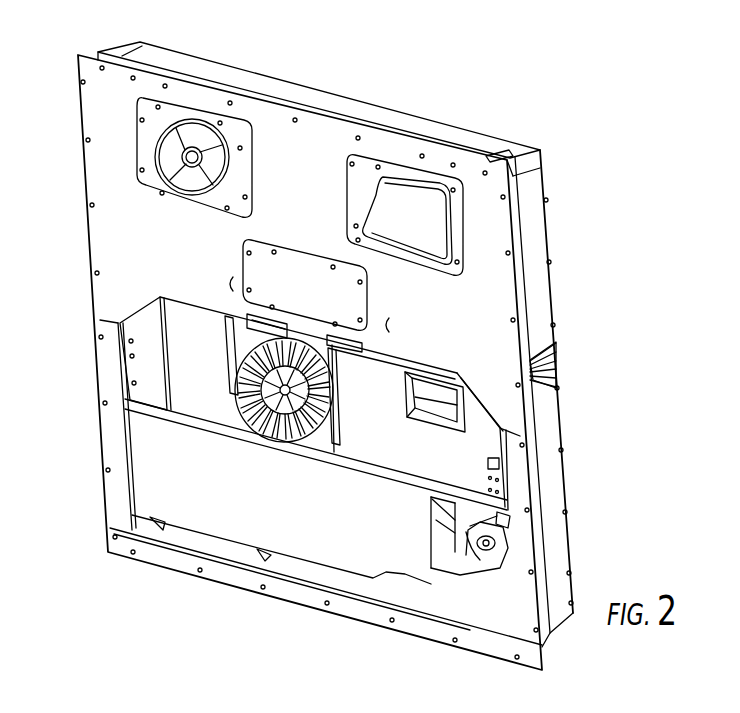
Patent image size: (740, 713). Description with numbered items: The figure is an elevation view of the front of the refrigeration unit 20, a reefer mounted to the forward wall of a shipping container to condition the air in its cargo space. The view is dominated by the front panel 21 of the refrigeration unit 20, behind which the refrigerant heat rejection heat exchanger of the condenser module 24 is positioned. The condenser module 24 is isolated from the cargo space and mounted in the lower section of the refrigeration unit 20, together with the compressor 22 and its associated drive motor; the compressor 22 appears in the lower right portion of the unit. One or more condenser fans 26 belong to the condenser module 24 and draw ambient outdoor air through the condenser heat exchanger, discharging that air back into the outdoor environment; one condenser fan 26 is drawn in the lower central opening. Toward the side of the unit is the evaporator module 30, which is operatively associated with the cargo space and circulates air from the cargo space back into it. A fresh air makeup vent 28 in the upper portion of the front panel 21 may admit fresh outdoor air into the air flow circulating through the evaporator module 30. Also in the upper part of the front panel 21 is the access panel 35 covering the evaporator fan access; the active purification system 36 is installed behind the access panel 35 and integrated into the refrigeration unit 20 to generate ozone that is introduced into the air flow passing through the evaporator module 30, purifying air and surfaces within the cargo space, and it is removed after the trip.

The refrigeration unit 20 is at (78, 268).
The front panel 21 is at (470, 322).
The compressor 22 is at (463, 548).
The condenser module 24 is at (273, 408).
The condenser fan 26 is at (288, 423).
The fresh air makeup vent 28 is at (176, 162).
The evaporator module 30 is at (562, 352).
The access panel 35 is at (355, 180).
The active purification system 36 is at (425, 190).